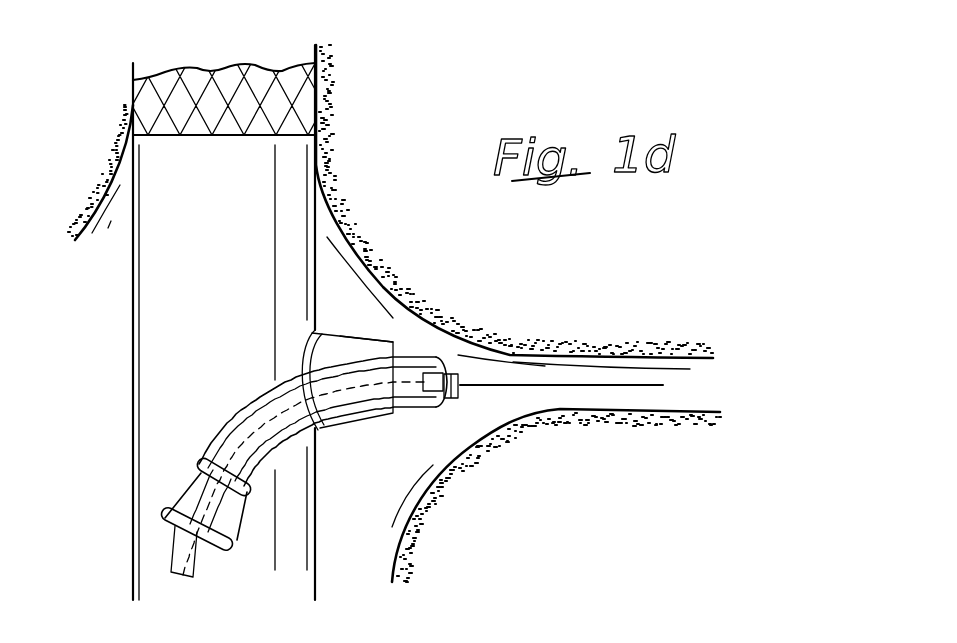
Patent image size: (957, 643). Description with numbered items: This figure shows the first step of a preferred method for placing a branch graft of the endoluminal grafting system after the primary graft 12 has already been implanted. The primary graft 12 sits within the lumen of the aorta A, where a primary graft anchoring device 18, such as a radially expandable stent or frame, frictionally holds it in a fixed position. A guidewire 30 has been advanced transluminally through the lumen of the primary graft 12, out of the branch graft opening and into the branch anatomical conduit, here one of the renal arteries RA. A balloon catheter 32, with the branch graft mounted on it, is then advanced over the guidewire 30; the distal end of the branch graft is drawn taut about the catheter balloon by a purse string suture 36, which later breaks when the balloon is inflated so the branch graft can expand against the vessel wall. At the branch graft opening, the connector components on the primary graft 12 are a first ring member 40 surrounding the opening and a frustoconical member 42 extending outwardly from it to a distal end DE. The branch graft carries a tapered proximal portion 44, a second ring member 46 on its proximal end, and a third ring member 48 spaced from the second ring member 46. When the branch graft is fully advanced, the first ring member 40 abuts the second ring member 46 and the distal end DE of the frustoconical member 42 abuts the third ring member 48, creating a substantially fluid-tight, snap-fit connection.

The aorta A is at (130, 94).
The primary graft 12 is at (265, 185).
The primary graft anchoring device 18 is at (277, 93).
The guidewire 30 is at (563, 384).
The balloon catheter 32 is at (170, 553).
The purse string suture 36 is at (448, 401).
The first ring member 40 is at (320, 333).
The frustoconical member 42 is at (345, 348).
The tapered proximal portion 44 is at (185, 496).
The second ring member 46 is at (160, 515).
The third ring member 48 is at (193, 466).
The distal end of the frustoconical member DE is at (408, 334).
The renal arteries RA is at (613, 413).